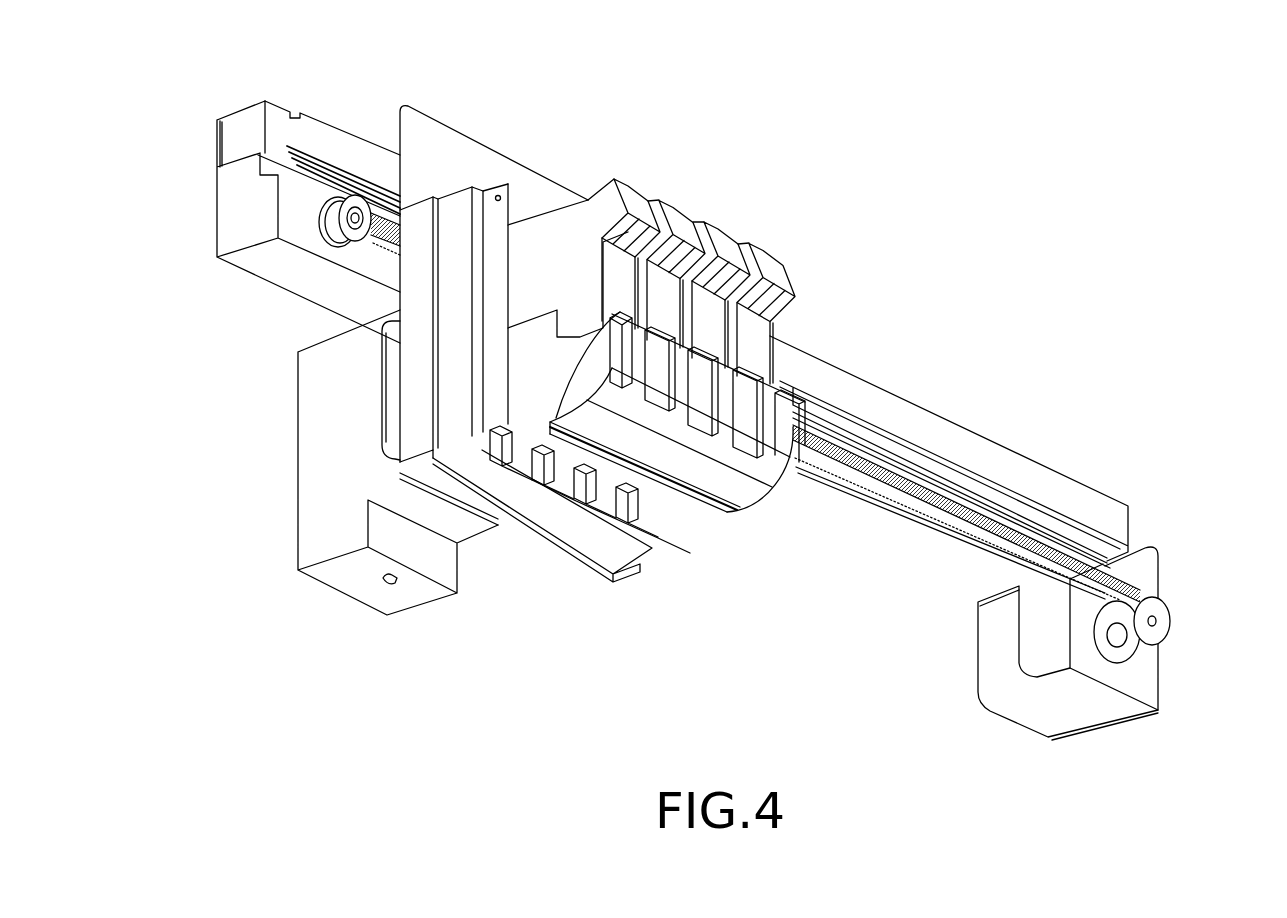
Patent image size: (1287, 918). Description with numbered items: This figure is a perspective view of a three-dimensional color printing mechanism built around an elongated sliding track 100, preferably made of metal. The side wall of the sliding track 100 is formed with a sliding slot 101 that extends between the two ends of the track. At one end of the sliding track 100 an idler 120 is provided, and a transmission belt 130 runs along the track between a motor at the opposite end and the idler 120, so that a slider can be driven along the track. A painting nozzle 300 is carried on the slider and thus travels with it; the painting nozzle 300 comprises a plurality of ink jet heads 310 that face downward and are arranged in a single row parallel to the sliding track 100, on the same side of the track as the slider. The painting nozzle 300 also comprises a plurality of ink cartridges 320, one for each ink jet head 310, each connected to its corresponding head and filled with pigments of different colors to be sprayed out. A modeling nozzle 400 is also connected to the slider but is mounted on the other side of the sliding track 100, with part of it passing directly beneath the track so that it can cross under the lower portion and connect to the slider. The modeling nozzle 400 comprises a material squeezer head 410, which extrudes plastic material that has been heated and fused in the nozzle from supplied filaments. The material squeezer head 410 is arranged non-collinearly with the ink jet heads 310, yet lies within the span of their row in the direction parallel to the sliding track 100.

The sliding track 100 is at (975, 436).
The sliding slot 101 is at (1113, 573).
The idler 120 is at (348, 210).
The transmission belt 130 is at (371, 252).
The painting nozzle 300 is at (708, 208).
The ink jet heads 310 is at (672, 527).
The ink cartridges 320 is at (563, 238).
The modeling nozzle 400 is at (315, 434).
The material squeezer head 410 is at (385, 580).